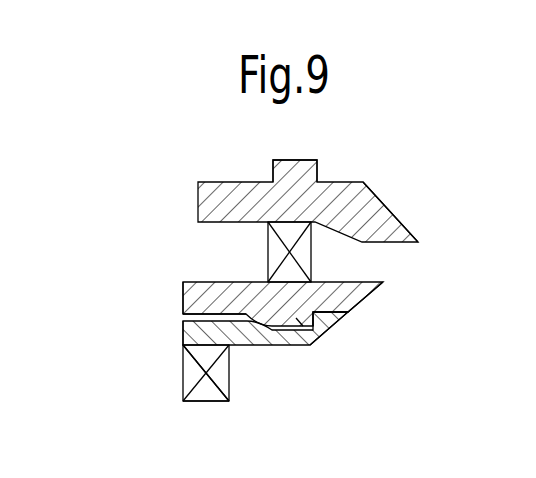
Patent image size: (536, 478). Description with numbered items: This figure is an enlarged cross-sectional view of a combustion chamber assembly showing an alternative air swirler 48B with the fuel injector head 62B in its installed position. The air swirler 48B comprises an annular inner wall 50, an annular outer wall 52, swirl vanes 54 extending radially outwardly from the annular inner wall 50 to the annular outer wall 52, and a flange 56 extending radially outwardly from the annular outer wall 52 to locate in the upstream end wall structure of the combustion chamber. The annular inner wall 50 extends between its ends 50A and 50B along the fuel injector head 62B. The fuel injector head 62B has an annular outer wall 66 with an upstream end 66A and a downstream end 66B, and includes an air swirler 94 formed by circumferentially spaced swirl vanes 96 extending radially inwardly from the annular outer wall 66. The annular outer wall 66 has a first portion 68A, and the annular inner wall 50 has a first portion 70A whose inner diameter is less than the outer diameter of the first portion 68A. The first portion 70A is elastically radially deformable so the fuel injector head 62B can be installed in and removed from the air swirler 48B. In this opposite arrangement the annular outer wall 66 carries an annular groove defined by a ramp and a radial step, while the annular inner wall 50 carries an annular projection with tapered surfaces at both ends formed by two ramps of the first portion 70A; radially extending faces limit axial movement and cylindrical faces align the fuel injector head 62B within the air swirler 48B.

The air swirler 48B is at (180, 209).
The annular outer wall 52 is at (362, 198).
The flange 56 is at (282, 160).
The swirl vanes 54 is at (278, 250).
The annular inner wall 50 is at (327, 290).
The first end of intermediate plate 50A is at (205, 283).
The tapered second end of intermediate plate 50B is at (380, 286).
The fuel injector head 62B is at (176, 319).
The annular outer wall 66 is at (282, 340).
The upstream end 66A is at (188, 340).
The downstream end 66B is at (325, 325).
The first portion 70A is at (303, 328).
The first portion 68A is at (253, 355).
The air swirler 94 is at (200, 393).
The swirl vanes 96 is at (215, 375).